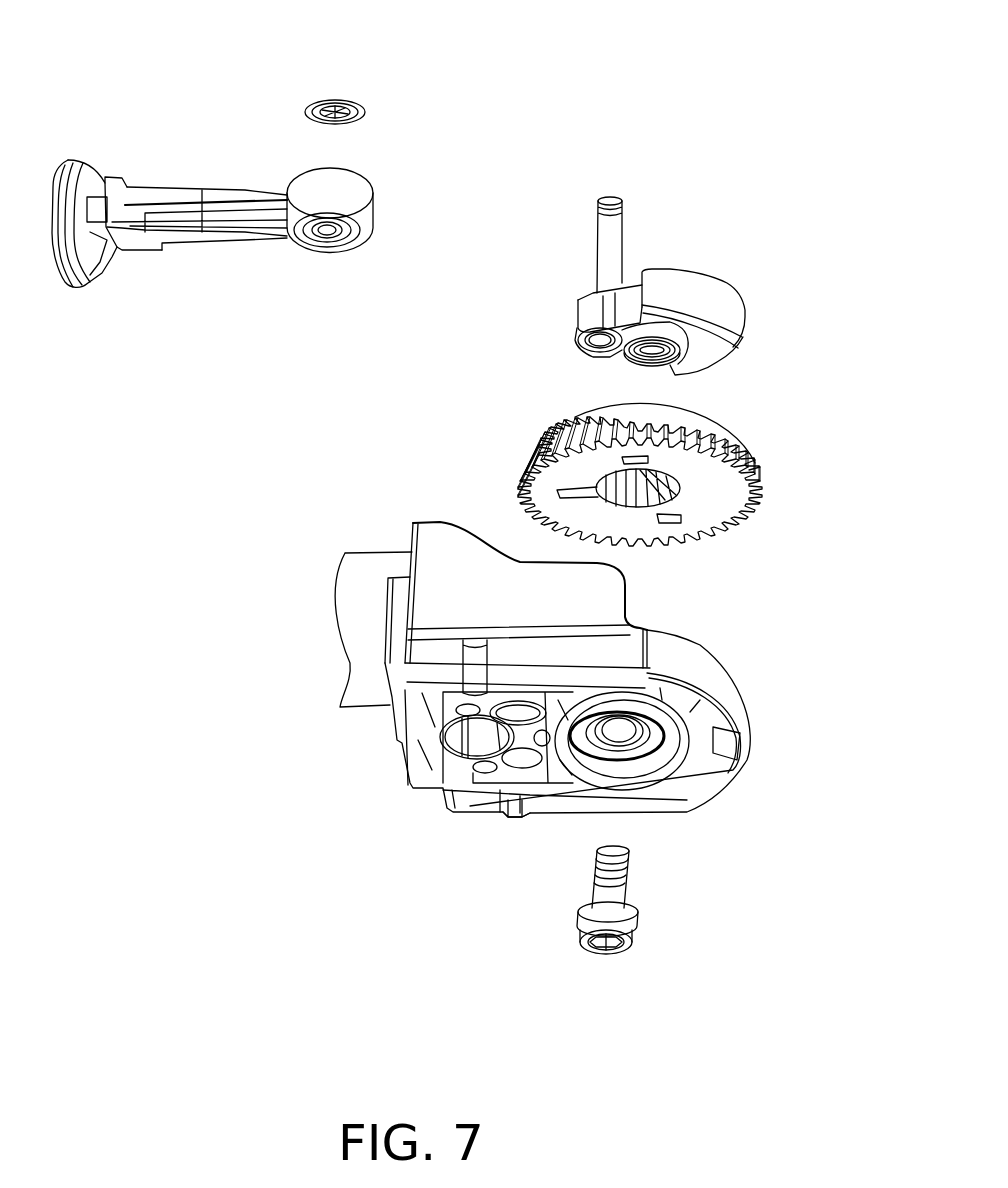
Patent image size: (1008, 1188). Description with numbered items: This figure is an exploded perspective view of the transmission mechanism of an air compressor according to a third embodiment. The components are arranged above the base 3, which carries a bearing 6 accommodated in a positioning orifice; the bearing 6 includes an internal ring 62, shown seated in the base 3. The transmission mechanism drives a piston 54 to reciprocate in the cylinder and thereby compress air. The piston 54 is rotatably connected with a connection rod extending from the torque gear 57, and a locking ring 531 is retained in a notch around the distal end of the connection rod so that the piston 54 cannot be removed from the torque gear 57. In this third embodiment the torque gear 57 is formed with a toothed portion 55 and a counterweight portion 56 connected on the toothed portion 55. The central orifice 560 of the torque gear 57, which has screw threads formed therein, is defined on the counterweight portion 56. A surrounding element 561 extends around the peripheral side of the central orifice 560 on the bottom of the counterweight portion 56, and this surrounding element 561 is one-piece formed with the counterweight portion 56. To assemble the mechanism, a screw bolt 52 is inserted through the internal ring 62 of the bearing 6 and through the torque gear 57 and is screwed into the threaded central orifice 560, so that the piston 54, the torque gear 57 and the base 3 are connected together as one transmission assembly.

The base 3 is at (740, 703).
The bearing 6 is at (700, 805).
The screw bolt 52 is at (625, 893).
The piston 54 is at (227, 195).
The locking ring 531 is at (366, 113).
The toothed portion 55 is at (727, 498).
The counterweight portion 56 is at (717, 297).
The central orifice 560 is at (687, 322).
The surrounding element 561 is at (720, 362).
The torque gear 57 is at (507, 513).
The internal ring 62 is at (527, 817).